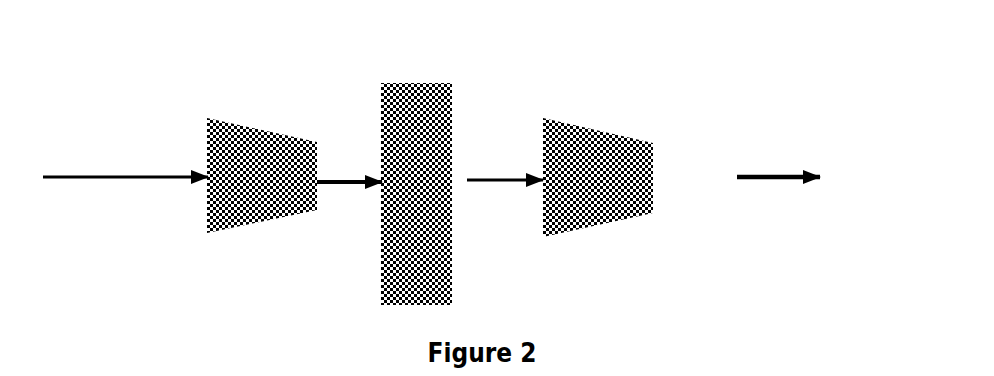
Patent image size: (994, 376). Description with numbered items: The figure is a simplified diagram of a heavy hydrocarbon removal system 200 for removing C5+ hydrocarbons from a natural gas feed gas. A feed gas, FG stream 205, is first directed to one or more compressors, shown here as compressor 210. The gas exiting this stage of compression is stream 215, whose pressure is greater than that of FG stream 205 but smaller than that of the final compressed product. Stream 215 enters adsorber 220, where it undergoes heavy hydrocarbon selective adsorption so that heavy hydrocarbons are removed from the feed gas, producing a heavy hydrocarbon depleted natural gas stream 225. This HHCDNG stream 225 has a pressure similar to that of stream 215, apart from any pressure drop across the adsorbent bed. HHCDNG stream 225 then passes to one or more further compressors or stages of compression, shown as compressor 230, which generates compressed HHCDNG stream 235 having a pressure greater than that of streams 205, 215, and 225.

The heavy hydrocarbon removal system 200 is at (829, 82).
The FG stream 205 is at (125, 163).
The compressor 210 is at (228, 180).
The stream 215 is at (326, 175).
The adsorber 220 is at (435, 188).
The heavy hydrocarbon depleted natural gas (HHCDNG) stream 225 is at (505, 167).
The compressor 230 is at (603, 181).
The compressed HHCDNG stream 235 is at (778, 163).